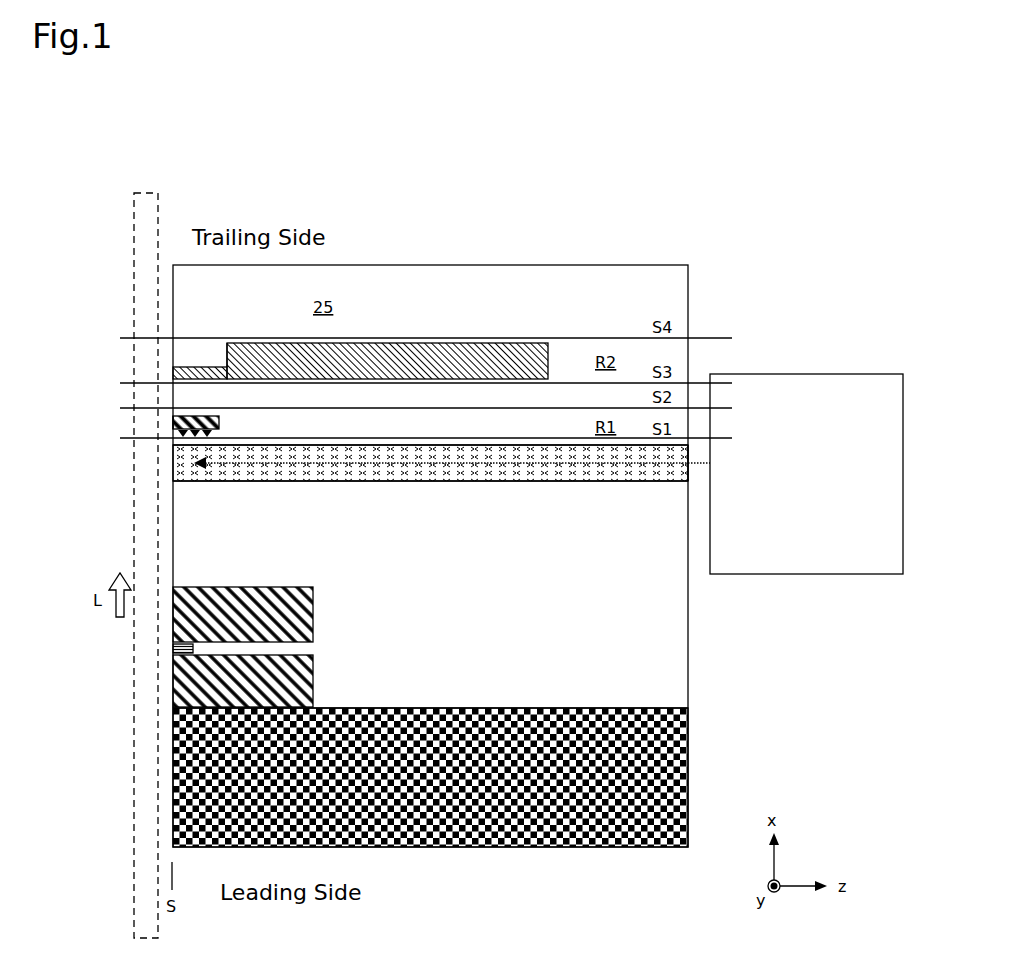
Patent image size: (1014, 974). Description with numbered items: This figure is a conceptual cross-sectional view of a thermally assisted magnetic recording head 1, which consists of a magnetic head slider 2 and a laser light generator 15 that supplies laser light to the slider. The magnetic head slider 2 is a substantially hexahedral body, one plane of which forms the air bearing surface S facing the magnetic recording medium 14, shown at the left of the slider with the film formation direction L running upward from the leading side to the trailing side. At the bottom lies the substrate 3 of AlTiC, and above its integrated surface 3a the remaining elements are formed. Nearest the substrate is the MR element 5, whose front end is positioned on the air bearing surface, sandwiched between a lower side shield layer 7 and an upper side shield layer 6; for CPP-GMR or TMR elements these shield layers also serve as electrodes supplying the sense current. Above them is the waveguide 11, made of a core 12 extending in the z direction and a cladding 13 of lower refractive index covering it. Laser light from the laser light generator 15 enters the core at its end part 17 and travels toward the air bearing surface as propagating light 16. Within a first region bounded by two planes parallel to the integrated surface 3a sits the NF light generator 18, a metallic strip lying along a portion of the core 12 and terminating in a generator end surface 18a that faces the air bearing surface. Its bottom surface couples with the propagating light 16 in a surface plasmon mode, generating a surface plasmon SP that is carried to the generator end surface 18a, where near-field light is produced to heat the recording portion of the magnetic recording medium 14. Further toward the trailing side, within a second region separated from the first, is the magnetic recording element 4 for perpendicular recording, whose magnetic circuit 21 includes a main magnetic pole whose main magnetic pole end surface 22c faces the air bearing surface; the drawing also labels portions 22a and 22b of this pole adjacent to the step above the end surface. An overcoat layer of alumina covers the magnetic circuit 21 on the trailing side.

The thermally assisted magnetic recording head 1 is at (531, 183).
The magnetic head slider 2 is at (427, 242).
The substrate 3 is at (688, 773).
The integrated surface 3a is at (580, 708).
The magnetic recording element 4 is at (206, 347).
The MR element 5 is at (173, 648).
The upper side shield layer 6 is at (313, 617).
The lower side shield layer 7 is at (313, 680).
The waveguide 11 is at (562, 498).
The core 12 is at (357, 481).
The cladding 13 is at (430, 459).
The magnetic recording medium 14 is at (146, 266).
The laser light generator 15 is at (778, 386).
The propagating light 16 is at (297, 462).
The end part 17 is at (688, 477).
The NF light generator 18 is at (206, 416).
The generator end surface 18a is at (173, 423).
The magnetic circuit 21 is at (424, 327).
The shield upper surface 22a is at (490, 343).
The shield step 22b is at (214, 367).
The main magnetic pole end surface 22c is at (173, 373).
The surface plasmon SP is at (221, 431).